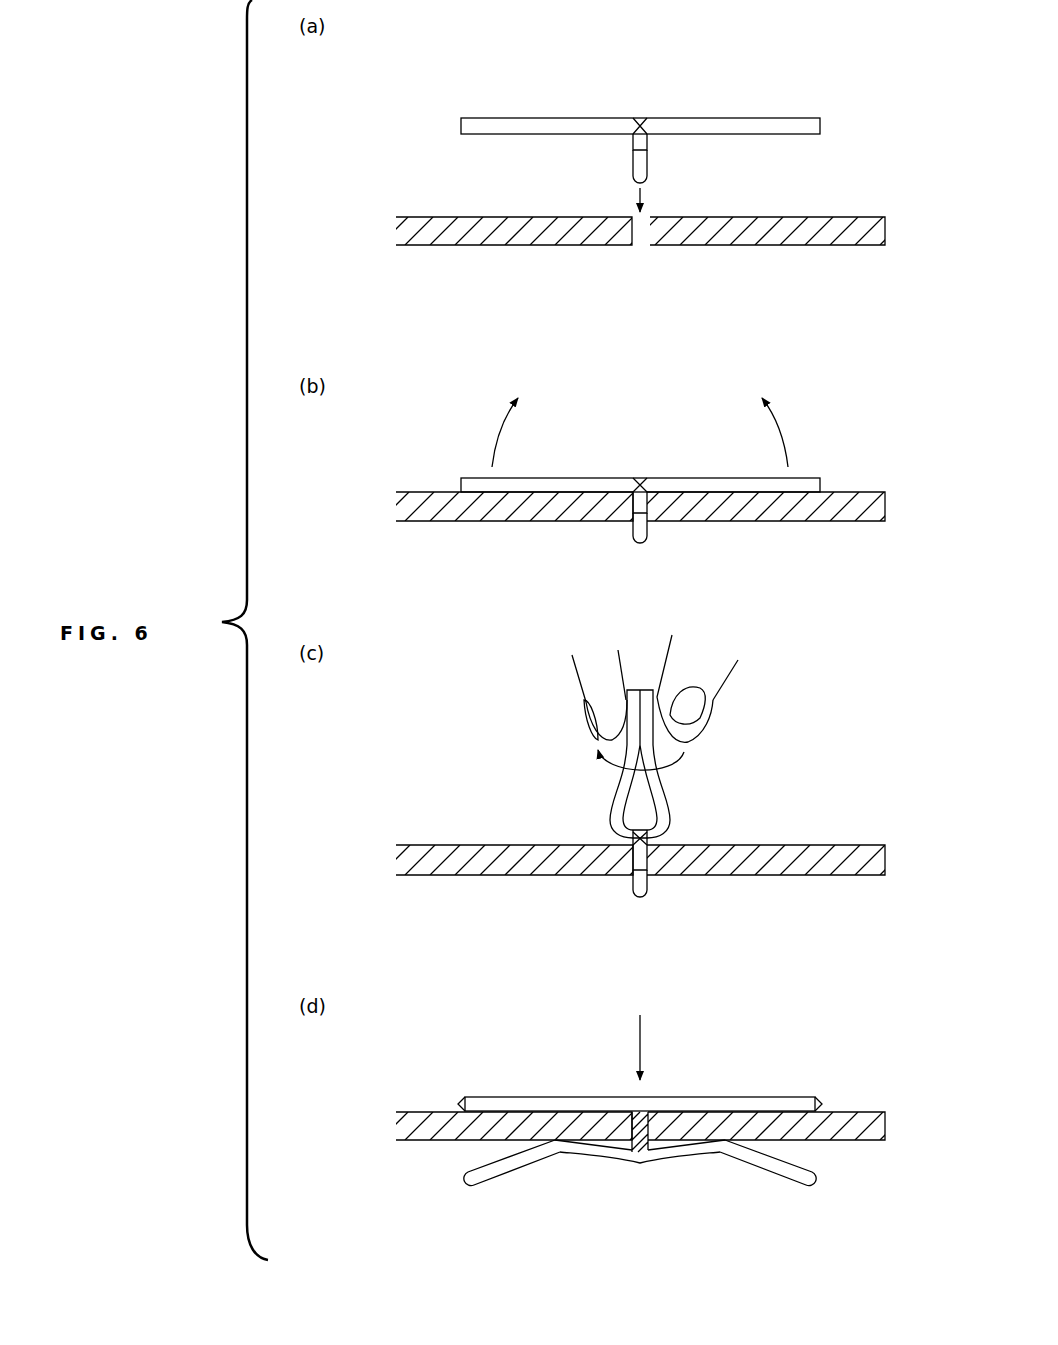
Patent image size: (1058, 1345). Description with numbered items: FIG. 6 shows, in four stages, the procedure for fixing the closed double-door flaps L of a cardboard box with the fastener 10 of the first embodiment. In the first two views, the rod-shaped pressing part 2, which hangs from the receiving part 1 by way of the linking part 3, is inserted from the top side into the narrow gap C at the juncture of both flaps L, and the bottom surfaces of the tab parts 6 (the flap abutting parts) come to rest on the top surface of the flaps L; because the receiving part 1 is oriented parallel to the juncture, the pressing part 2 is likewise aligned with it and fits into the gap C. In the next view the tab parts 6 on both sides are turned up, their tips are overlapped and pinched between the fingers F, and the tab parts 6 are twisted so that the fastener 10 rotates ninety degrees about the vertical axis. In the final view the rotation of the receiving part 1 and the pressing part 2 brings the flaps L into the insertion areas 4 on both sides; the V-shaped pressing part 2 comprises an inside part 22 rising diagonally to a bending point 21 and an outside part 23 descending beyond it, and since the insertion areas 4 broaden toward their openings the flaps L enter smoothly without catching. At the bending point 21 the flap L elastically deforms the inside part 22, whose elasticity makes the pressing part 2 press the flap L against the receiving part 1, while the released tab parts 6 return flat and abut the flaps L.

The fastener 10 is at (616, 643).
The receiving part 1 is at (640, 569).
The flap abutting part (tab part) 6 is at (556, 124).
The pressing part 2 is at (613, 696).
The linking part 3 is at (633, 144).
The insertion area 4 is at (613, 1181).
The bending point 21 is at (553, 1152).
The inside part 22 is at (595, 1154).
The outside part 23 is at (500, 1168).
The flap L is at (430, 236).
The gap C is at (636, 248).
The fingers F is at (715, 672).